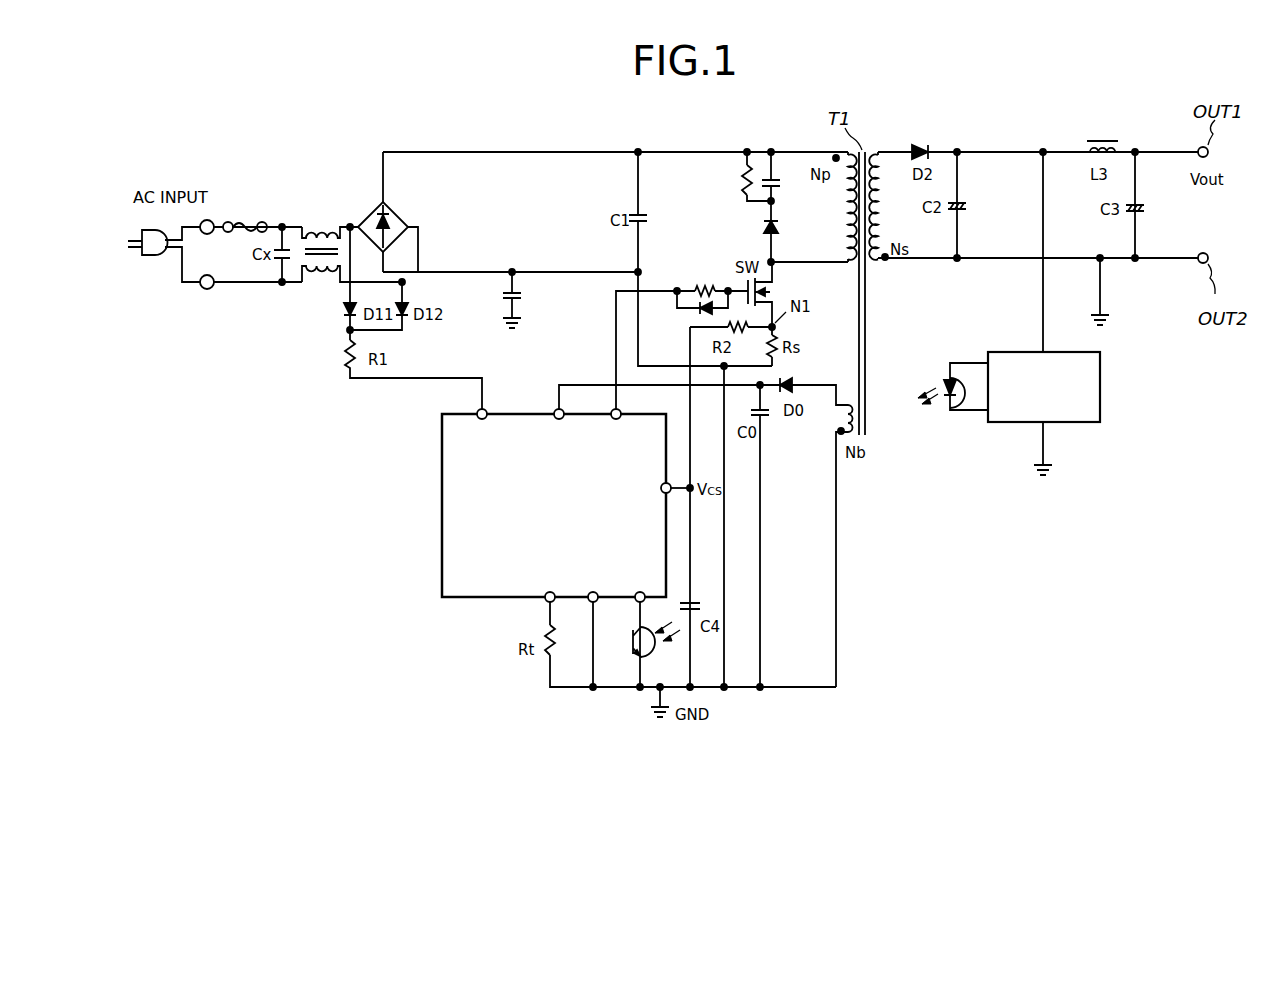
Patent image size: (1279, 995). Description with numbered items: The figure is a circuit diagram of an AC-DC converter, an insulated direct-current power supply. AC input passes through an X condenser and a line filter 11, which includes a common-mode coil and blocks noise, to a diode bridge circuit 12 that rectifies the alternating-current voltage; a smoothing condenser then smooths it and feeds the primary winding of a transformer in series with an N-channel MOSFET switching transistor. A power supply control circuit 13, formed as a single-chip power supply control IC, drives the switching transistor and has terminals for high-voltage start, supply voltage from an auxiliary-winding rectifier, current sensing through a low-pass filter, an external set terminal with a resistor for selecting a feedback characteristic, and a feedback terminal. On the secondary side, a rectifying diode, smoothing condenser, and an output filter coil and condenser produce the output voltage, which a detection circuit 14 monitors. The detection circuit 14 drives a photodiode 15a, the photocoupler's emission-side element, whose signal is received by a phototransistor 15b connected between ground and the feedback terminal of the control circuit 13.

The line filter 11 is at (312, 285).
The diode bridge circuit 12 is at (361, 200).
The power supply control circuit 13 is at (442, 520).
The detection circuit 14 is at (1103, 402).
The photodiode 15a is at (940, 412).
The phototransistor 15b is at (632, 662).